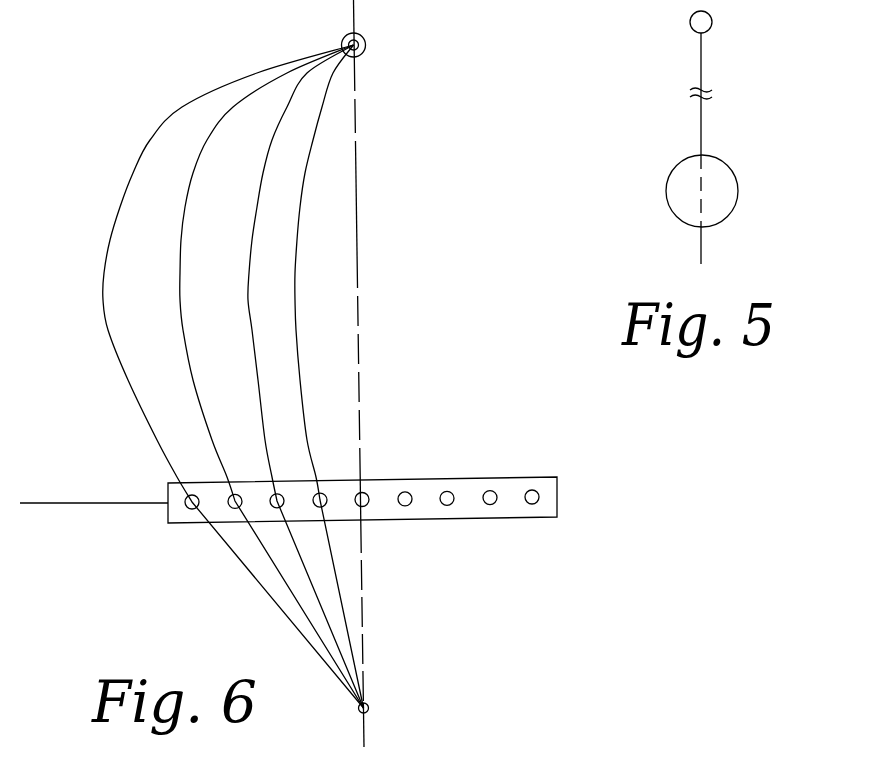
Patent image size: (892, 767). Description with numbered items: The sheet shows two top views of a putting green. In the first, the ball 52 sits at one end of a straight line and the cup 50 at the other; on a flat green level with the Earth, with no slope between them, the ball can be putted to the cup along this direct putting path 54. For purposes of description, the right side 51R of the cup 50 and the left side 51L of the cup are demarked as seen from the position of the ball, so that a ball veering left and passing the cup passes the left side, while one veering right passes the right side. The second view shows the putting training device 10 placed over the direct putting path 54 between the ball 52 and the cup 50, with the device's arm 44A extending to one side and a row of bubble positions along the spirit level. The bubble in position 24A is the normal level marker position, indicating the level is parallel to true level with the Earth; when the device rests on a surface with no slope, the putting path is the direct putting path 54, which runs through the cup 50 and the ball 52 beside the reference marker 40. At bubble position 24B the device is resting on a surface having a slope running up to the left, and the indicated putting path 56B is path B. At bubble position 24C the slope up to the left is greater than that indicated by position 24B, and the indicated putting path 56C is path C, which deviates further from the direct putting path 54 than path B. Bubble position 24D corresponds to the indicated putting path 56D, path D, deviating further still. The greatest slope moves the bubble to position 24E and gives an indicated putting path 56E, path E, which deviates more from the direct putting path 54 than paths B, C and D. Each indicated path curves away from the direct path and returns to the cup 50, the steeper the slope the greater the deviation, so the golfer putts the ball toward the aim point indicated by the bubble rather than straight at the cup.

In FIG. 6, the putting training device 10 is at (507, 477).
In FIG. 6, the bubble position 24A is at (368, 506).
In FIG. 6, the bubble position 24B is at (323, 493).
In FIG. 6, the bubble position 24C is at (270, 493).
In FIG. 6, the bubble position 24D is at (234, 508).
In FIG. 6, the bubble position 24E is at (190, 508).
In FIG. 6, the reference plane 40 is at (444, 313).
In FIG. 6, the arm 44A is at (78, 502).
In FIG. 6, the cup 50 is at (365, 46).
In FIG. 5, the cup 50 is at (676, 210).
In FIG. 5, the right side of the cup 51R is at (667, 192).
In FIG. 5, the left side of the cup 51L is at (739, 192).
In FIG. 6, the ball 52 is at (369, 709).
In FIG. 5, the ball 52 is at (712, 25).
In FIG. 6, the direct putting path 54 is at (358, 207).
In FIG. 5, the direct putting path 54 is at (702, 128).
In FIG. 6, the indicated putting path 56B is at (296, 317).
In FIG. 6, the indicated putting path 56C is at (248, 303).
In FIG. 6, the indicated putting path 56D is at (272, 376).
In FIG. 6, the indicated putting path 56E is at (103, 295).
In FIG. 6, the path B is at (296, 252).
In FIG. 6, the path C is at (262, 195).
In FIG. 6, the path D is at (181, 228).
In FIG. 6, the path E is at (128, 194).